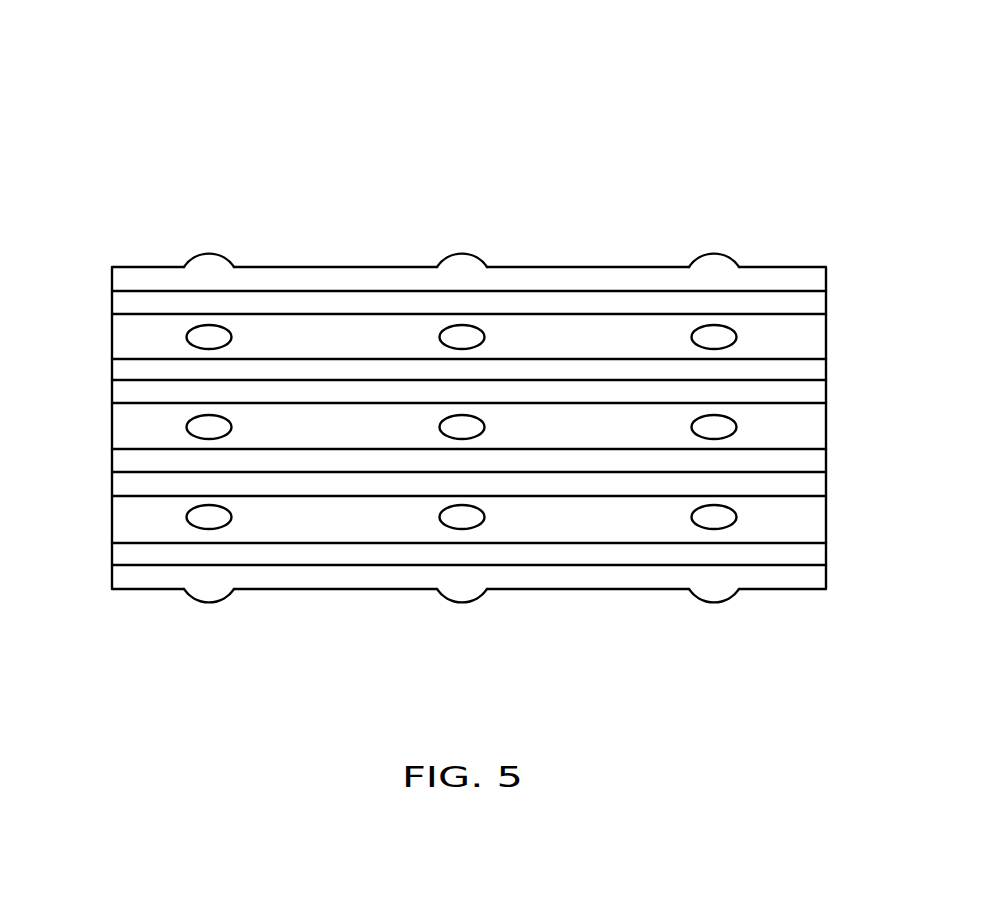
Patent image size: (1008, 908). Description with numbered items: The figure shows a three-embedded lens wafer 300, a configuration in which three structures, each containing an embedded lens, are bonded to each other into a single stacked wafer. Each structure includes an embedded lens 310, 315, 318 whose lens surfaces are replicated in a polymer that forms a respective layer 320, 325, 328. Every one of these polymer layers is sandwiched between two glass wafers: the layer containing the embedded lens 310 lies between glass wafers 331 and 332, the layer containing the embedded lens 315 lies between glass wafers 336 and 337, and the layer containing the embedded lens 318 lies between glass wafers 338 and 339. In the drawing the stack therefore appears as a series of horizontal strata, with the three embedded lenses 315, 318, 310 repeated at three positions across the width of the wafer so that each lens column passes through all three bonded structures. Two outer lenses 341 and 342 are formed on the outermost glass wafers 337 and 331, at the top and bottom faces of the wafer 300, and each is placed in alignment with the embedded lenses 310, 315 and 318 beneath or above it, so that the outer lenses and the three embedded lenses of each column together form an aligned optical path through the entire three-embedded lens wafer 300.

The three-embedded lens wafer 300 is at (297, 64).
The embedded lens 310 is at (196, 522).
The embedded lens 315 is at (216, 336).
The embedded lens 318 is at (222, 430).
The polymer layer 320 is at (807, 525).
The polymer layer 325 is at (807, 340).
The polymer layer 328 is at (807, 422).
The glass wafer 331 is at (115, 555).
The glass wafer 332 is at (115, 487).
The glass wafer 336 is at (115, 372).
The glass wafer 337 is at (115, 305).
The glass wafer 338 is at (115, 462).
The glass wafer 339 is at (115, 395).
The outer lens 341 is at (203, 262).
The outer lens 342 is at (212, 593).